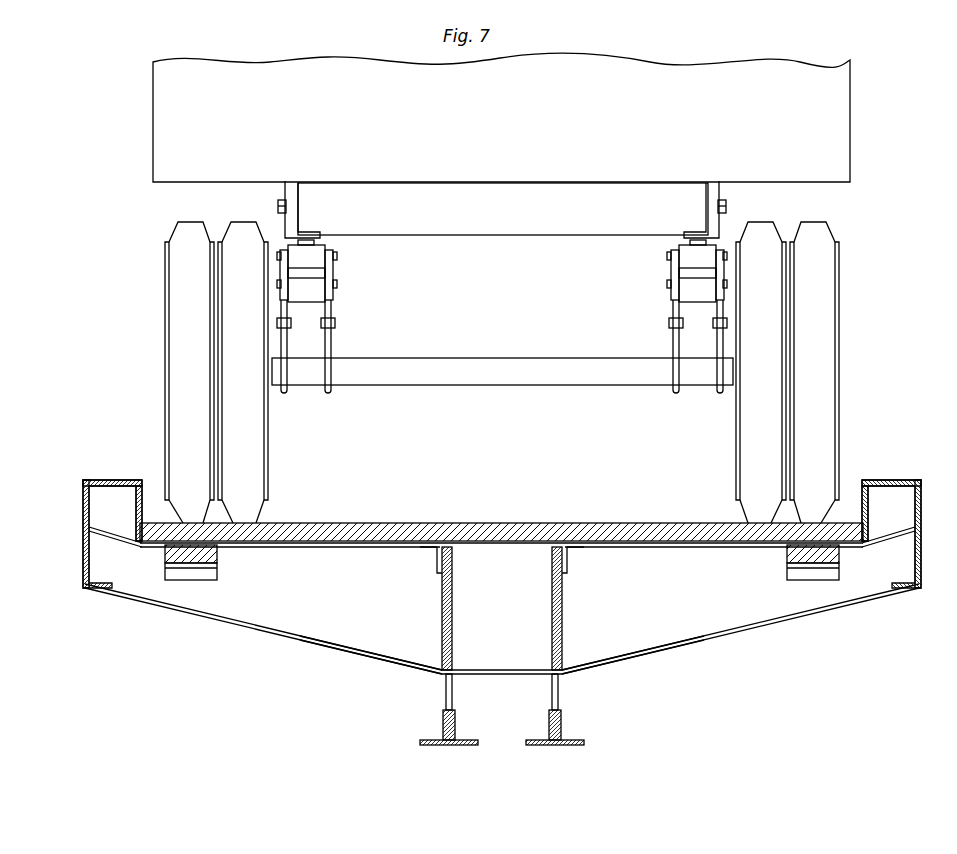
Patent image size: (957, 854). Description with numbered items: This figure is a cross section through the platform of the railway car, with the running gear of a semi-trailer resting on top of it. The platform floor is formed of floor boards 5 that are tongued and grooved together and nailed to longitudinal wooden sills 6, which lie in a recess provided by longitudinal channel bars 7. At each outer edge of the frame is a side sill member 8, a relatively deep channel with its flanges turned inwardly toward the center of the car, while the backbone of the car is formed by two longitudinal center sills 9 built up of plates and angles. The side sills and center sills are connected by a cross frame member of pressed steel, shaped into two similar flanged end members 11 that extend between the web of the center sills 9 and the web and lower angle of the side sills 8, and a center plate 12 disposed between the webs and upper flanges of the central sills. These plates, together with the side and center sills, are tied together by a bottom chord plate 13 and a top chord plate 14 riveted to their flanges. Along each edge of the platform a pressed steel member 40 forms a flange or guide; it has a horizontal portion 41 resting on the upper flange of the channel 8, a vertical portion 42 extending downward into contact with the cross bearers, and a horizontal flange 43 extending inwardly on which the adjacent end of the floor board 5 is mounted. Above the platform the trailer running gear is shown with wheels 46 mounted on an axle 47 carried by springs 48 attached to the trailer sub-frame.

The floor boards 5 is at (332, 523).
The wooden sills 6 is at (218, 555).
The longitudinal channel bars 7 is at (218, 575).
The side sill members 8 is at (82, 487).
The longitudinal sills 9 is at (445, 692).
The end members 11 is at (372, 636).
The center plate 12 is at (505, 648).
The bottom chord plate 13 is at (280, 635).
The top chord plate 14 is at (700, 540).
The pressed steel members 40 is at (130, 481).
The horizontal portion 41 is at (108, 460).
The inner wall 42 is at (137, 505).
The horizontal flange 43 is at (145, 546).
The wheels 46 is at (255, 468).
The axle 47 is at (505, 372).
The springs 48 is at (320, 310).